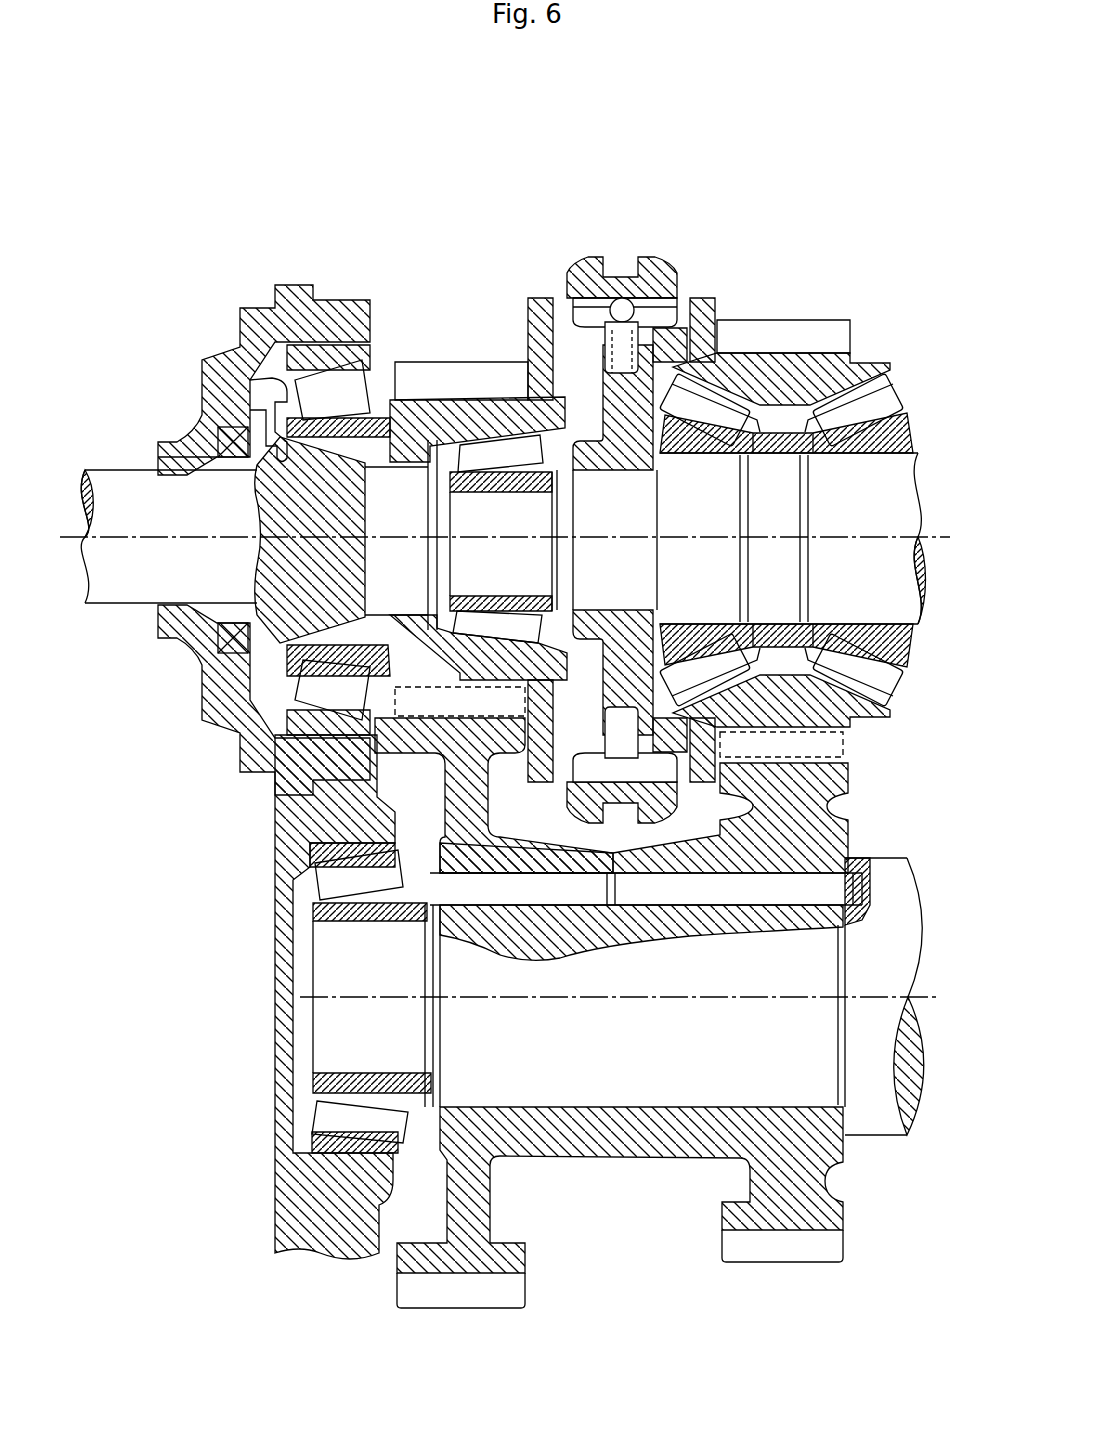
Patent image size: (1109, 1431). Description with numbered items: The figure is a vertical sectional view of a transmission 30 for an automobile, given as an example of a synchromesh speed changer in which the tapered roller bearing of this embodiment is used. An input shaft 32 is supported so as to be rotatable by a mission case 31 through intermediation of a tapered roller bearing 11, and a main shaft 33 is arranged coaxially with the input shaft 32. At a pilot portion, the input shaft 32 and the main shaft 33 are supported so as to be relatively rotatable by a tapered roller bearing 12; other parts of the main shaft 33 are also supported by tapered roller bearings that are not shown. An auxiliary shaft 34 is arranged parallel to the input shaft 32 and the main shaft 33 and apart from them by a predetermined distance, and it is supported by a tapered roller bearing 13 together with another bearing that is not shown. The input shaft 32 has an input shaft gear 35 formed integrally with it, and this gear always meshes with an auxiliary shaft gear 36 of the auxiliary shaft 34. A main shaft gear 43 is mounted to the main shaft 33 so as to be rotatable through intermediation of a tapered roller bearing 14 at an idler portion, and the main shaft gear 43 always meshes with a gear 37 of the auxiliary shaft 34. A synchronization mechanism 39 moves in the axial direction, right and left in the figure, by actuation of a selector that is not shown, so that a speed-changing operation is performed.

The transmission 30 is at (816, 178).
The mission case 31 is at (262, 814).
The input shaft 32 is at (145, 493).
The main shaft 33 is at (907, 487).
The auxiliary shaft 34 is at (894, 949).
The input shaft gear 35 is at (440, 372).
The auxiliary shaft gear 36 is at (462, 1298).
The gear 37 is at (787, 1248).
The synchronization mechanism 39 is at (689, 196).
The main shaft gear 43 is at (781, 330).
The tapered roller bearing 11 is at (333, 701).
The tapered roller bearing 12 is at (521, 438).
The tapered roller bearing 13 is at (339, 884).
The tapered roller bearing 14 is at (872, 678).